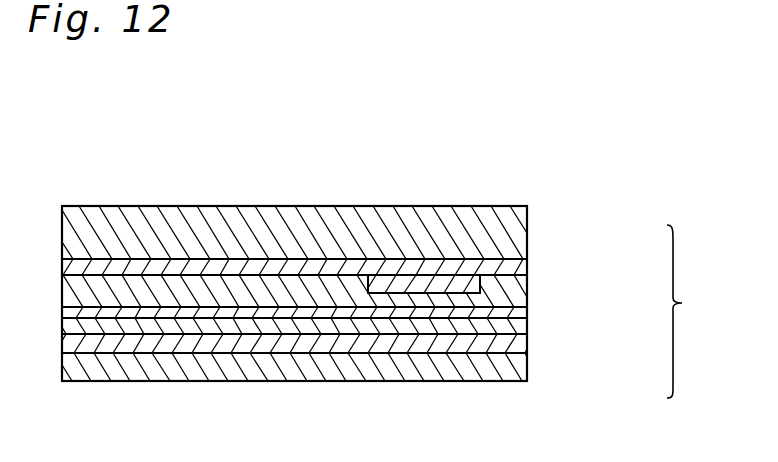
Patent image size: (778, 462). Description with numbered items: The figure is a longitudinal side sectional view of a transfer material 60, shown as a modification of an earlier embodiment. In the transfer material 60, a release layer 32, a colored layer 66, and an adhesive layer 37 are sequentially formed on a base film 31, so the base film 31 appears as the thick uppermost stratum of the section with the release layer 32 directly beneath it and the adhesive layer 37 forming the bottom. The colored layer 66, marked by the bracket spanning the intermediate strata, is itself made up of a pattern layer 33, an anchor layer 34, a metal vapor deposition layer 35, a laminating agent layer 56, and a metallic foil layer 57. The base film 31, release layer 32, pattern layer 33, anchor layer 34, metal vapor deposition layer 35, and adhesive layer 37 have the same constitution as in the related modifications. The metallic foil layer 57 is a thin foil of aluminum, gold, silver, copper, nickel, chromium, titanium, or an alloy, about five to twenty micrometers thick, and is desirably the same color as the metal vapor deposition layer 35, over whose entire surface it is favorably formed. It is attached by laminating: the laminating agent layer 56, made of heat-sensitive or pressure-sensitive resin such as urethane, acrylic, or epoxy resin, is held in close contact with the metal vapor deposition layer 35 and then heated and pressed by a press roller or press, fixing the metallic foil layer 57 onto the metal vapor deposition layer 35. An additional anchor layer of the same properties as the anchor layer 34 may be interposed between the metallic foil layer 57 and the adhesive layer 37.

The transfer material 60 is at (309, 158).
The base film 31 is at (527, 210).
The release layer 32 is at (527, 262).
The pattern layer 33 is at (527, 275).
The anchor layer 34 is at (482, 281).
The metal vapor deposition layer 35 is at (527, 307).
The laminating agent layer 56 is at (527, 323).
The metallic foil layer 57 is at (527, 345).
The adhesive layer 37 is at (527, 370).
The colored layer 66 is at (700, 311).